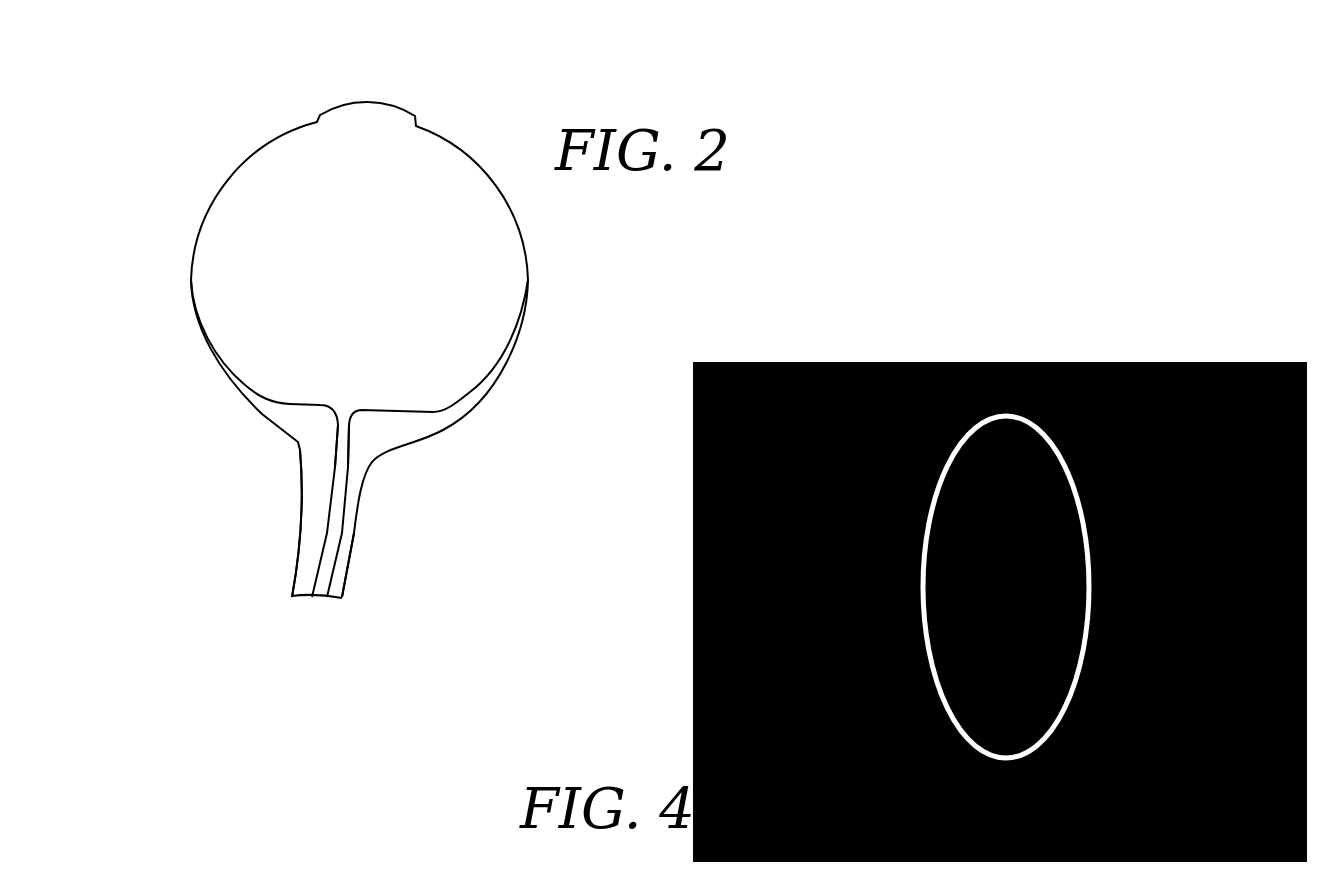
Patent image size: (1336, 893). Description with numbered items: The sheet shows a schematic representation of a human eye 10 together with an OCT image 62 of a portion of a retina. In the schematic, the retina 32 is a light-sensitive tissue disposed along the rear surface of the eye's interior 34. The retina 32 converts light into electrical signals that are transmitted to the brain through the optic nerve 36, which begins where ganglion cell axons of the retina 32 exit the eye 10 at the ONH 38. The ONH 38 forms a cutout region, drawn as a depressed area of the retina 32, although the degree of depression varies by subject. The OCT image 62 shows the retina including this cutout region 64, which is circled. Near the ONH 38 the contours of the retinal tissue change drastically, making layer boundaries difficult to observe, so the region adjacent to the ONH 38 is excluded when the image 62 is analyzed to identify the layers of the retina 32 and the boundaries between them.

In FIG. 2, the human eye 10 is at (176, 130).
In FIG. 2, the retina 32 is at (243, 395).
In FIG. 2, the eye's interior 34 is at (334, 260).
In FIG. 2, the optic nerve 36 is at (345, 517).
In FIG. 2, the ONH 38 is at (343, 412).
In FIG. 4, the OCT image 62 is at (796, 450).
In FIG. 4, the cutout region 64 is at (955, 441).